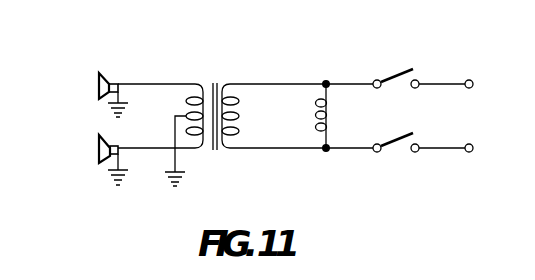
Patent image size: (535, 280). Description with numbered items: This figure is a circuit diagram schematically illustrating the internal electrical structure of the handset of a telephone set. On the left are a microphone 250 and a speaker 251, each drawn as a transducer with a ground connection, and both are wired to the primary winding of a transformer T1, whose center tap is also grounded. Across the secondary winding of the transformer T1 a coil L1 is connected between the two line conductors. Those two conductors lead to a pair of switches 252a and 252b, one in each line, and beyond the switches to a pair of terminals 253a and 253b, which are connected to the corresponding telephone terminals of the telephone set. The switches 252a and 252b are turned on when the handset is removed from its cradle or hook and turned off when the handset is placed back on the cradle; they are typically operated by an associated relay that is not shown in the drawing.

The microphone 250 is at (100, 72).
The speaker 251 is at (98, 148).
The transformer T1 is at (207, 70).
The coil L1 is at (334, 122).
The switch 252a is at (390, 77).
The switch 252b is at (394, 146).
The terminal 253a is at (472, 79).
The terminal 253b is at (468, 153).